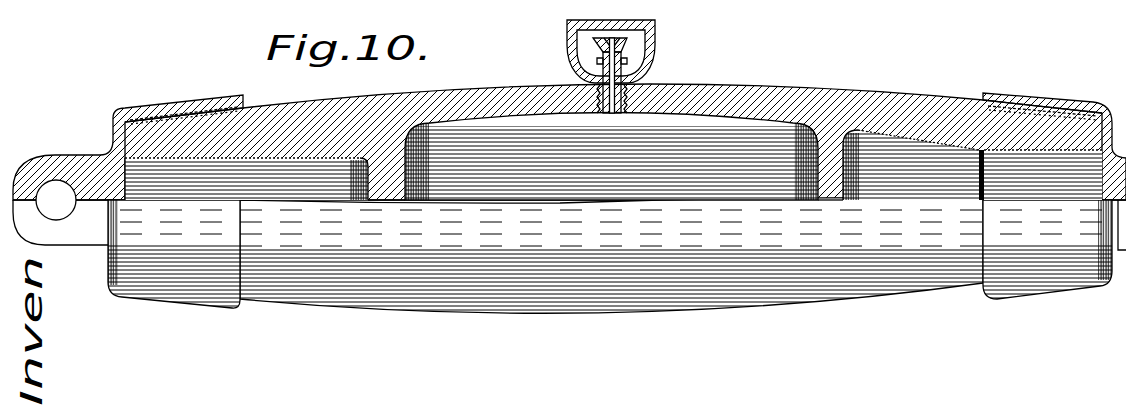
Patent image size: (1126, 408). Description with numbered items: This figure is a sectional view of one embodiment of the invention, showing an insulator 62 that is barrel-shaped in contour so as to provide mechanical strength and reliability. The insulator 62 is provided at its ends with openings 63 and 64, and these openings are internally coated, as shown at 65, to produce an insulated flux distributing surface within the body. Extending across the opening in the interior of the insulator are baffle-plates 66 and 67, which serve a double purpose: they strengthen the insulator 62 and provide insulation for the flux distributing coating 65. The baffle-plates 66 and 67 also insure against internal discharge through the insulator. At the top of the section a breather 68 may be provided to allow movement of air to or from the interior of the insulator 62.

The insulator 62 is at (460, 103).
The opening 63 is at (157, 182).
The opening 64 is at (933, 173).
The flux distributing coating 65 is at (363, 190).
The baffle-plate 66 is at (390, 178).
The baffle-plate 67 is at (799, 127).
The breather 68 is at (655, 48).